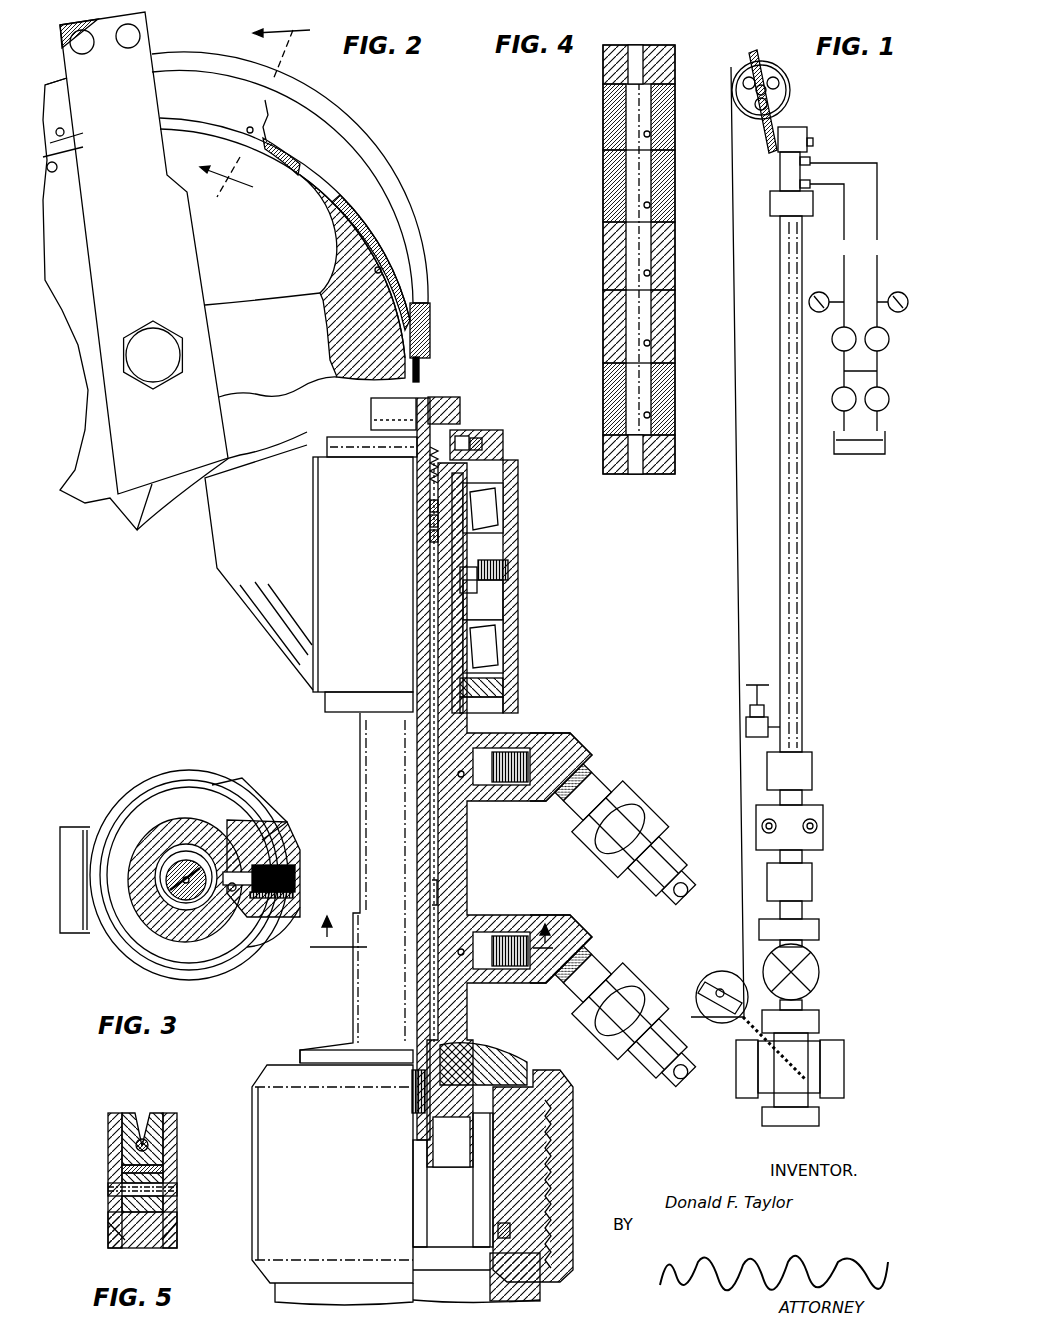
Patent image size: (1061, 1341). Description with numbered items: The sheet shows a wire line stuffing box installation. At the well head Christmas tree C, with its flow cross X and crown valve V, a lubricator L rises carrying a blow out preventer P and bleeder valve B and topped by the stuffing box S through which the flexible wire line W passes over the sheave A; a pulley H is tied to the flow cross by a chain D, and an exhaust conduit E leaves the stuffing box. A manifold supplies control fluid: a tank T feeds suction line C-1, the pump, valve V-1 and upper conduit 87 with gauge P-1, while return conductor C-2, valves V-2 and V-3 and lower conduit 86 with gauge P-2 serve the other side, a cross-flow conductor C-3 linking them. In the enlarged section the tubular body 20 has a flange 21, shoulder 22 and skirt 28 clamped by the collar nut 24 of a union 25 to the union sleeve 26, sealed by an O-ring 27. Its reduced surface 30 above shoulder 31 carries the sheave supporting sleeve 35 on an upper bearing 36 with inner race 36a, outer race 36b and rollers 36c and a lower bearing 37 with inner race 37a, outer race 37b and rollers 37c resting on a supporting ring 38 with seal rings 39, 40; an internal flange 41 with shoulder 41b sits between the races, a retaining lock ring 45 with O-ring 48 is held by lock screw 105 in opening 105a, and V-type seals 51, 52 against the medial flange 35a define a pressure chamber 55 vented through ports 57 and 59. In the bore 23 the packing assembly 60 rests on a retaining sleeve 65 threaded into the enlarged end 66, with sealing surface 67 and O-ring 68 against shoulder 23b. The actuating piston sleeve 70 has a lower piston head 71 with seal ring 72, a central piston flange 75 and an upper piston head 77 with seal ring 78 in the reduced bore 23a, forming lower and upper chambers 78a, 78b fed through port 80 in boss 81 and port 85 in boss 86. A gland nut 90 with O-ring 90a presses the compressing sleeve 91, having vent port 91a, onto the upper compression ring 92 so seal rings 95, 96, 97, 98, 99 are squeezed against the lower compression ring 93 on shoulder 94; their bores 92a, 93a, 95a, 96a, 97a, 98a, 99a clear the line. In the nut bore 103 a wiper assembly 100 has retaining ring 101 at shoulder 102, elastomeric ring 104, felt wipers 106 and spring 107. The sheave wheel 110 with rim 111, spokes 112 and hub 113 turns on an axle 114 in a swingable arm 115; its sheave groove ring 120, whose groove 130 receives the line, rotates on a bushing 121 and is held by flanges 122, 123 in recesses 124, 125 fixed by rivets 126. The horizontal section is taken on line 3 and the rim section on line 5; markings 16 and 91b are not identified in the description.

In FIG. 2, the sheave A is at (82, 340).
In FIG. 1, the sheave A is at (790, 90).
In FIG. 1, the bleeder valve B is at (746, 727).
In FIG. 1, the well head Christmas tree C is at (826, 1029).
In FIG. 1, the chain D is at (800, 1063).
In FIG. 1, the exhaust conduit E is at (813, 141).
In FIG. 1, the pulley H is at (720, 970).
In FIG. 1, the lubricator L is at (800, 615).
In FIG. 1, the blow out preventer P is at (822, 813).
In FIG. 1, the stuffing box S is at (780, 176).
In FIG. 1, the tank T is at (864, 454).
In FIG. 1, the crown valve V is at (820, 974).
In FIG. 2, the flexible wire line W is at (421, 372).
In FIG. 5, the flexible wire line W is at (142, 1138).
In FIG. 1, the flexible wire line W is at (734, 560).
In FIG. 1, the flow cross X is at (777, 1086).
In FIG. 1, the pressure gauge P-1 is at (902, 294).
In FIG. 1, the pressure gauge P-2 is at (829, 296).
In FIG. 1, the valve V-1 is at (889, 339).
In FIG. 1, the valve V-2 is at (835, 391).
In FIG. 1, the valve V-3 is at (832, 337).
In FIG. 1, the suction line C-1 is at (878, 420).
In FIG. 1, the return conductor C-2 is at (843, 418).
In FIG. 1, the cross-flow conductor C-3 is at (870, 372).
In FIG. 2, the section line 3 is at (434, 944).
In FIG. 2, the section line 5 is at (255, 116).
In FIG. 2, the passage 16 is at (465, 920).
In FIG. 2, the tubular body 20 is at (381, 758).
In FIG. 2, the enlarged flange 21 is at (540, 1128).
In FIG. 2, the upwardly facing shoulder 22 is at (543, 1100).
In FIG. 2, the bore 23 is at (437, 868).
In FIG. 2, the reduced bore 23a is at (440, 660).
In FIG. 2, the downwardly facing shoulder 23b is at (464, 1168).
In FIG. 2, the collar nut 24 is at (570, 1200).
In FIG. 2, the union 25 is at (278, 1222).
In FIG. 2, the union sleeve 26 is at (535, 1297).
In FIG. 2, the O-ring seal member 27 is at (512, 1230).
In FIG. 2, the skirt portion 28 is at (497, 1205).
In FIG. 2, the reduced bearing and sealing surface section 30 is at (501, 636).
In FIG. 2, the shoulder 31 is at (495, 706).
In FIG. 2, the sheave supporting sleeve 35 is at (318, 694).
In FIG. 3, the sheave supporting sleeve 35 is at (167, 808).
In FIG. 2, the medial flange 35a is at (425, 572).
In FIG. 2, the upper bearing 36 is at (500, 513).
In FIG. 2, the inner race 36a is at (500, 455).
In FIG. 2, the outer race 36b is at (505, 530).
In FIG. 2, the rollers 36c is at (505, 498).
In FIG. 2, the lower bearing 37 is at (540, 634).
In FIG. 2, the inner race 37a is at (465, 632).
In FIG. 2, the outer race 37b is at (505, 622).
In FIG. 2, the frustoconical rollers 37c is at (505, 660).
In FIG. 2, the supporting ring 38 is at (510, 690).
In FIG. 2, the internal seal ring 39 is at (460, 690).
In FIG. 2, the external seal ring 40 is at (505, 680).
In FIG. 2, the internal annular flange 41 is at (510, 615).
In FIG. 2, the downwardly facing shoulder 41b is at (505, 610).
In FIG. 2, the retaining lock ring 45 is at (492, 437).
In FIG. 2, the O-ring seal member 48 is at (518, 470).
In FIG. 2, the V-type seal member 51 is at (495, 562).
In FIG. 2, the V-type seal member 52 is at (505, 600).
In FIG. 2, the pressure chamber 55 is at (460, 608).
In FIG. 2, the lateral port 57 is at (462, 582).
In FIG. 2, the lateral port 59 is at (480, 580).
In FIG. 2, the packing assembly 60 is at (416, 873).
In FIG. 3, the packing assembly 60 is at (136, 951).
In FIG. 4, the packing assembly 60 is at (594, 258).
In FIG. 2, the lower retaining sleeve 65 is at (470, 1075).
In FIG. 3, the lower retaining sleeve 65 is at (163, 856).
In FIG. 2, the enlarged threaded lower end portion 66 is at (507, 1065).
In FIG. 2, the sealing surface 67 is at (420, 985).
In FIG. 2, the O-ring seal member 68 is at (535, 1097).
In FIG. 2, the actuating piston sleeve 70 is at (435, 893).
In FIG. 3, the actuating piston sleeve 70 is at (200, 892).
In FIG. 2, the piston head 71 is at (422, 1118).
In FIG. 2, the annular seal ring 72 is at (414, 1100).
In FIG. 2, the piston flange 75 is at (465, 905).
In FIG. 2, the piston head 77 is at (432, 735).
In FIG. 2, the seal ring 78 is at (480, 730).
In FIG. 2, the lower chamber 78a is at (493, 907).
In FIG. 2, the upper chamber 78b is at (440, 847).
In FIG. 2, the lateral inlet and outlet port 80 is at (461, 955).
In FIG. 3, the lateral inlet and outlet port 80 is at (235, 892).
In FIG. 2, the boss 81 is at (510, 977).
In FIG. 3, the boss 81 is at (282, 855).
In FIG. 2, the upper lateral port 85 is at (461, 777).
In FIG. 2, the control fluid conduit 86 is at (501, 792).
In FIG. 3, the control fluid conduit 86 is at (243, 793).
In FIG. 1, the control fluid conduit 86 is at (844, 232).
In FIG. 2, the upper control fluid conduit 87 is at (675, 897).
In FIG. 1, the upper control fluid conduit 87 is at (877, 232).
In FIG. 2, the packing gland nut 90 is at (398, 406).
In FIG. 2, the O-ring seal member 90a is at (478, 425).
In FIG. 2, the compressing sleeve 91 is at (427, 557).
In FIG. 2, the lateral port 91a is at (440, 590).
In FIG. 2, the seal 91b is at (428, 545).
In FIG. 2, the upper compression ring 92 is at (417, 778).
In FIG. 4, the upper compression ring 92 is at (668, 66).
In FIG. 4, the bore 92a is at (640, 46).
In FIG. 2, the lower compression ring 93 is at (417, 1003).
In FIG. 4, the lower compression ring 93 is at (665, 456).
In FIG. 4, the bore 93a is at (637, 474).
In FIG. 2, the internal annular shoulder 94 is at (417, 1022).
In FIG. 2, the upper packing ring 95 is at (417, 815).
In FIG. 4, the upper packing ring 95 is at (670, 108).
In FIG. 4, the bore 95a is at (651, 134).
In FIG. 2, the sealing ring 96 is at (417, 847).
In FIG. 4, the sealing ring 96 is at (670, 175).
In FIG. 4, the bore 96a is at (651, 205).
In FIG. 2, the central seal ring 97 is at (417, 889).
In FIG. 4, the central seal ring 97 is at (670, 243).
In FIG. 4, the bore 97a is at (651, 273).
In FIG. 2, the central seal ring 98 is at (417, 925).
In FIG. 4, the central seal ring 98 is at (670, 312).
In FIG. 4, the bore 98a is at (651, 343).
In FIG. 2, the lower seal ring 99 is at (417, 958).
In FIG. 4, the lower seal ring 99 is at (670, 385).
In FIG. 4, the bore 99a is at (651, 415).
In FIG. 2, the wiper assembly 100 is at (410, 504).
In FIG. 2, the retaining sleeve 101 is at (430, 458).
In FIG. 2, the downwardly facing shoulder 102 is at (400, 408).
In FIG. 2, the bore 103 is at (421, 447).
In FIG. 2, the resilient elastomeric seal ring 104 is at (430, 486).
In FIG. 2, the retaining lock screw 105 is at (485, 432).
In FIG. 2, the lateral threaded opening 105a is at (496, 445).
In FIG. 2, the wiper felt members 106 is at (428, 518).
In FIG. 2, the helical coil spring 107 is at (428, 532).
In FIG. 2, the wheel 110 is at (375, 323).
In FIG. 5, the wheel 110 is at (125, 1220).
In FIG. 2, the rim 111 is at (323, 205).
In FIG. 2, the spokes 112 is at (273, 307).
In FIG. 2, the hub 113 is at (93, 393).
In FIG. 2, the cross pin axle 114 is at (143, 345).
In FIG. 2, the swingable arm 115 is at (222, 527).
In FIG. 3, the swingable arm 115 is at (72, 845).
In FIG. 1, the swingable arm 115 is at (766, 145).
In FIG. 2, the sheave groove ring 120 is at (323, 143).
In FIG. 5, the sheave groove ring 120 is at (128, 1113).
In FIG. 2, the anti-friction bearing bushing 121 is at (355, 183).
In FIG. 5, the anti-friction bearing bushing 121 is at (122, 1167).
In FIG. 2, the retaining flange 122 is at (197, 95).
In FIG. 5, the retaining flange 122 is at (110, 1131).
In FIG. 5, the retaining flange 123 is at (170, 1128).
In FIG. 5, the external annular recess 124 is at (122, 1203).
In FIG. 5, the external annular recess 125 is at (165, 1203).
In FIG. 2, the retaining rivets 126 is at (250, 127).
In FIG. 5, the retaining rivets 126 is at (171, 1188).
In FIG. 5, the groove 130 is at (151, 1112).